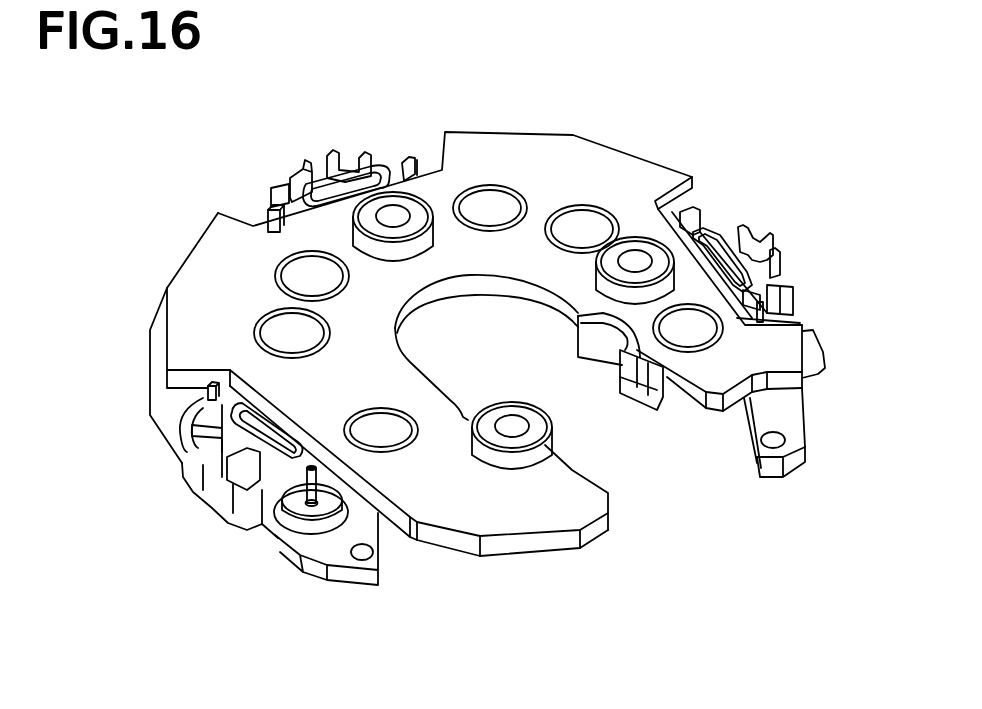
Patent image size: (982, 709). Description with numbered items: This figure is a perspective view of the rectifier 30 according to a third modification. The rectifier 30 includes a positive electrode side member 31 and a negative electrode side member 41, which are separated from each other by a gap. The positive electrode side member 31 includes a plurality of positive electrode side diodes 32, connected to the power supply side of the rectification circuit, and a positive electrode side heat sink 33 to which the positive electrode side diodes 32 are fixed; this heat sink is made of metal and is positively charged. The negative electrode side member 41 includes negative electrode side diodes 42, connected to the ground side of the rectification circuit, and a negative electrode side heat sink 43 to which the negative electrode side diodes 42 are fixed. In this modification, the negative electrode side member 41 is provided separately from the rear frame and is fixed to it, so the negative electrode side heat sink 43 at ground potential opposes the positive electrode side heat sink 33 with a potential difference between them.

The rectifier 30 is at (782, 220).
The positive electrode side member 31 is at (630, 77).
The positive electrode side diodes 32 is at (562, 210).
The positive electrode side heat sink 33 is at (627, 150).
The negative electrode side member 41 is at (373, 640).
The negative electrode side diodes 42 is at (296, 523).
The negative electrode side heat sink 43 is at (338, 558).